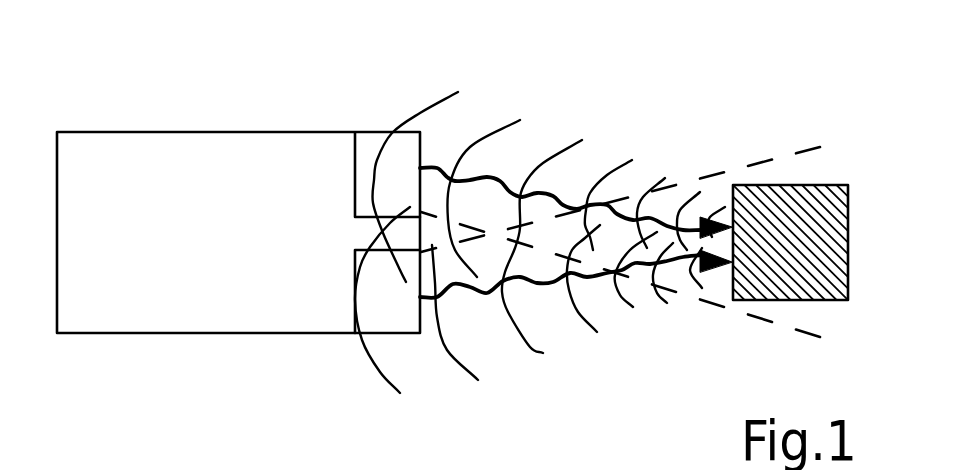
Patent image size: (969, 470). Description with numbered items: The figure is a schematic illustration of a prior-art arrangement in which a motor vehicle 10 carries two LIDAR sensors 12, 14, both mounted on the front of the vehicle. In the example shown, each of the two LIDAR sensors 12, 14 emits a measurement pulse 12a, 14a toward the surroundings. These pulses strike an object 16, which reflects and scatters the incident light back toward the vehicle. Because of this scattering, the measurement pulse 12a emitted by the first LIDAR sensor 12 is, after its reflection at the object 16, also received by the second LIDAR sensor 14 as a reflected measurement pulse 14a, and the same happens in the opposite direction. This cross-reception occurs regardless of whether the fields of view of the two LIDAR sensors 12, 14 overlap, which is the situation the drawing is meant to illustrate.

The motor vehicle 10 is at (158, 119).
The first LIDAR sensor 12 is at (372, 148).
The measurement pulse 12a is at (557, 200).
The second LIDAR sensor 14 is at (372, 325).
The reflected measurement pulse 14a is at (518, 230).
The object 16 is at (823, 198).